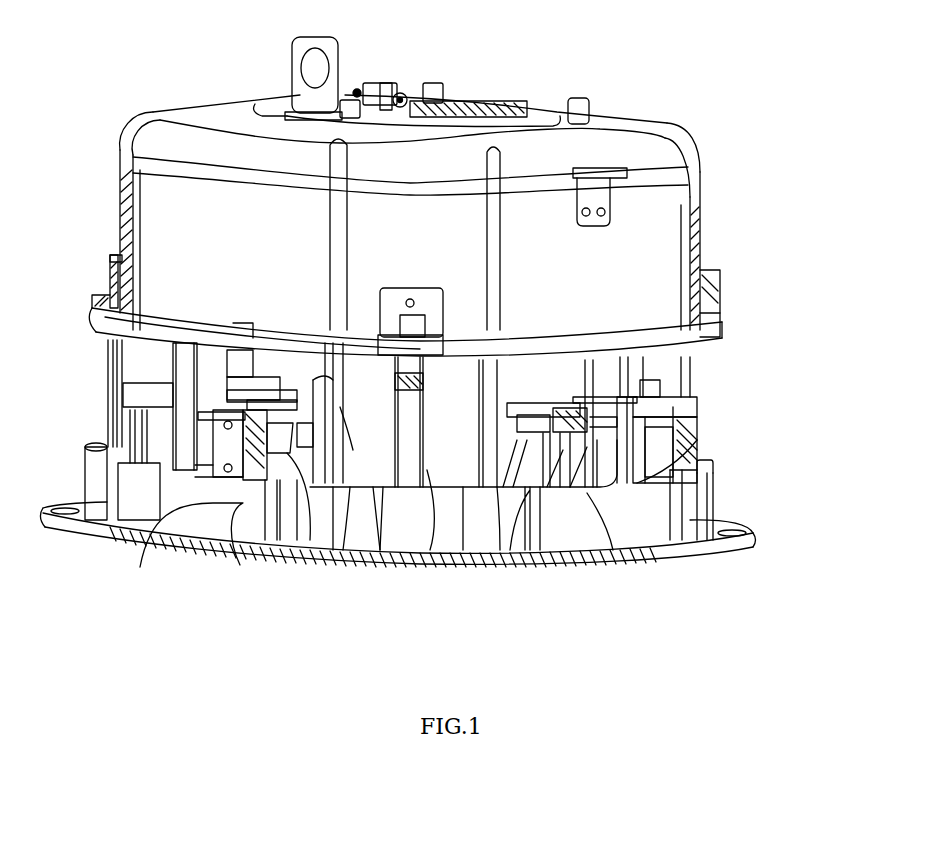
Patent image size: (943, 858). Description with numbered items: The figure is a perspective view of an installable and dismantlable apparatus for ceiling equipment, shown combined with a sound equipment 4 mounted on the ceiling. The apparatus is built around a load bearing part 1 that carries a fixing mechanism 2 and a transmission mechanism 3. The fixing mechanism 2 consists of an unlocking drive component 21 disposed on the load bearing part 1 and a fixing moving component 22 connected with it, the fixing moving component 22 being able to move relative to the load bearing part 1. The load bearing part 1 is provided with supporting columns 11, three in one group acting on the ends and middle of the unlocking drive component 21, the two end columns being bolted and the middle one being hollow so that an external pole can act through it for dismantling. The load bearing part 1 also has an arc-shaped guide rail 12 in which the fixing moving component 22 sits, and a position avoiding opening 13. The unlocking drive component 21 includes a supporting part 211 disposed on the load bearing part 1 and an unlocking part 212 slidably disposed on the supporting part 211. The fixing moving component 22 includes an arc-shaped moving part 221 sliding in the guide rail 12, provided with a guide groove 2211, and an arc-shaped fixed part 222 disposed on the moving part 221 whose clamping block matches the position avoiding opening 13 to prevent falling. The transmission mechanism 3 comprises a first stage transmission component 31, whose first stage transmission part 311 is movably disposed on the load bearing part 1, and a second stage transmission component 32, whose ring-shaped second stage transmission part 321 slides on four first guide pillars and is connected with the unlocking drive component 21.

The load bearing part 1 is at (700, 572).
The supporting column 11 is at (195, 445).
The guide rail 12 is at (262, 510).
The position avoiding opening 13 is at (212, 425).
The fixing mechanism 2 is at (712, 422).
The unlocking drive component 21 is at (687, 372).
The supporting part 211 is at (513, 405).
The unlocking part 212 is at (357, 490).
The fixing moving component 22 is at (700, 437).
The moving part 221 is at (510, 510).
The guide groove 2211 is at (604, 500).
The fixed part 222 is at (310, 500).
The transmission mechanism 3 is at (642, 300).
The first stage transmission component 31 is at (422, 460).
The first stage transmission part 311 is at (395, 445).
The second stage transmission component 32 is at (148, 305).
The second stage transmission part 321 is at (107, 332).
The sound equipment 4 is at (632, 99).